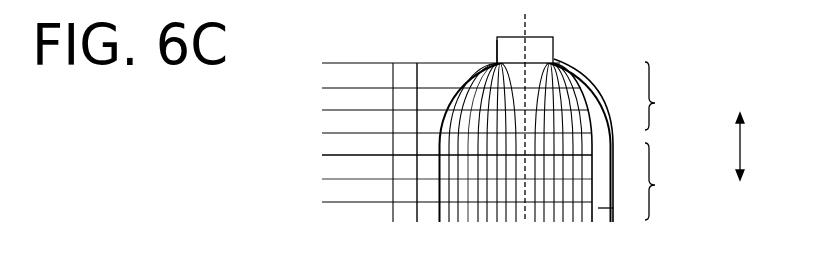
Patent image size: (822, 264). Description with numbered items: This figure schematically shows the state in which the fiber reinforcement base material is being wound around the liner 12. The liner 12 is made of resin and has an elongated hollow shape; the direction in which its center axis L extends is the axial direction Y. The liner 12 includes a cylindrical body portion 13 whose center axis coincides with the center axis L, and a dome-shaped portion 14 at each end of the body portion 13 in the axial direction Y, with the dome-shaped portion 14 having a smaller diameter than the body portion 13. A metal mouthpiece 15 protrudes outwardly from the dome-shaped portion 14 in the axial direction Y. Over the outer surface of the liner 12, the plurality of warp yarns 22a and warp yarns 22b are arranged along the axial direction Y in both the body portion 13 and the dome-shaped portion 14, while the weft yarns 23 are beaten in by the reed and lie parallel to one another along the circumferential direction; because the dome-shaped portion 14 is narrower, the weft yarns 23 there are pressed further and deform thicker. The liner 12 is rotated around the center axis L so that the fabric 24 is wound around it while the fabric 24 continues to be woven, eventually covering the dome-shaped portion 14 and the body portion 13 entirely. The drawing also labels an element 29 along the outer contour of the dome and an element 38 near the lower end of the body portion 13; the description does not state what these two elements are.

The liner 12 is at (553, 40).
The cylindrical body portion 13 is at (667, 181).
The dome-shaped portion 14 is at (667, 96).
The mouthpiece 15 is at (496, 56).
The warp yarn 22a is at (332, 111).
The warp yarn 22b is at (330, 90).
The weft yarn 23 is at (419, 63).
The fabric 24 is at (586, 99).
The outer layer 29 is at (575, 68).
The end portion 38 is at (613, 209).
The center axis L is at (520, 31).
The axial direction Y is at (746, 140).